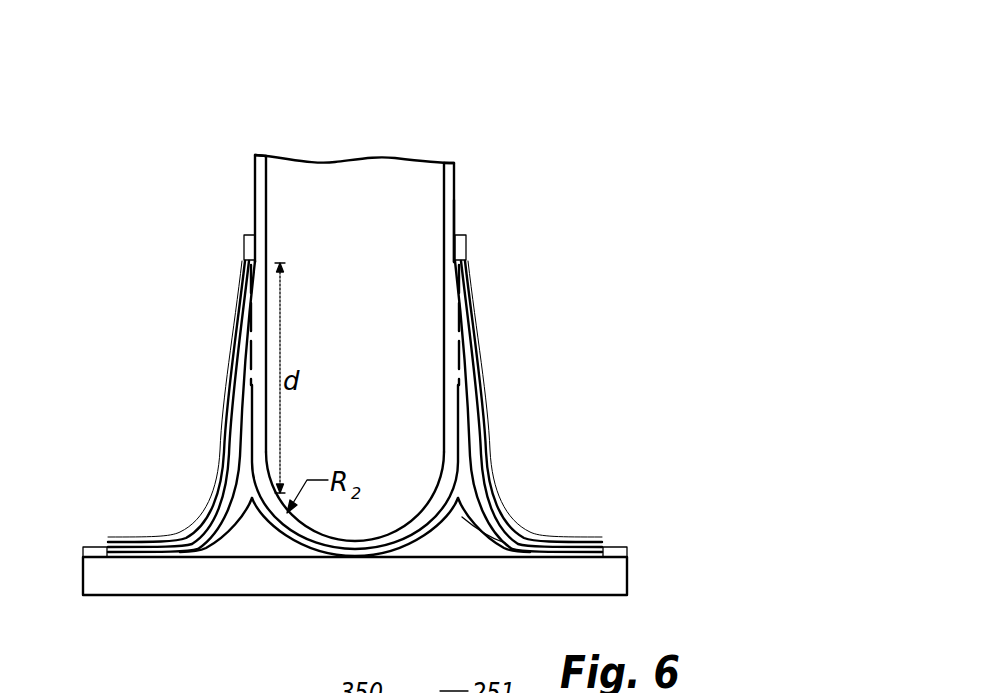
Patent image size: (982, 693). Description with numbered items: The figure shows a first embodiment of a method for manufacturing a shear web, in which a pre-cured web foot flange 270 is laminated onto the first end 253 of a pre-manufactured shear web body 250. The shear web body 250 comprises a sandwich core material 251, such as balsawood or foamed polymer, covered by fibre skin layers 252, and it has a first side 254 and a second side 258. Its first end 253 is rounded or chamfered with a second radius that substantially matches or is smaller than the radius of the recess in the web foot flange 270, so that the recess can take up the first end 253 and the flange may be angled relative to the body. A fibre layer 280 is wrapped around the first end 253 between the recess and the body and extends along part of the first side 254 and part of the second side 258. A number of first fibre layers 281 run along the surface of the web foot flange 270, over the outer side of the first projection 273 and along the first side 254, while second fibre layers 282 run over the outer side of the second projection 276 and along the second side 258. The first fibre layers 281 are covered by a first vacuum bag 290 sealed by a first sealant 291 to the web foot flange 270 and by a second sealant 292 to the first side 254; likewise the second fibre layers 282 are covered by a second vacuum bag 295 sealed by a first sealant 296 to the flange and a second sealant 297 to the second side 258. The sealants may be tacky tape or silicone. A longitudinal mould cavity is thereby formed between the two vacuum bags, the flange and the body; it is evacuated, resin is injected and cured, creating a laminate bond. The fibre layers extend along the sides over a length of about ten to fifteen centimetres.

The shear web body 250 is at (338, 164).
The sandwich core material 251 is at (417, 170).
The fibre skin layers 252 is at (455, 193).
The first end 253 is at (343, 540).
The first side 254 is at (253, 167).
The second side 258 is at (457, 205).
The web foot flange 270 is at (455, 578).
The first projection 273 is at (253, 522).
The second projection 276 is at (497, 527).
The fibre layer 280 is at (482, 483).
The first fibre layers 281 is at (235, 442).
The second fibre layers 282 is at (510, 517).
The first vacuum bag 290 is at (105, 537).
The first sealant 291 is at (84, 549).
The second sealant 292 is at (244, 245).
The second vacuum bag 295 is at (598, 543).
The first sealant 296 is at (624, 550).
The second sealant 297 is at (463, 256).